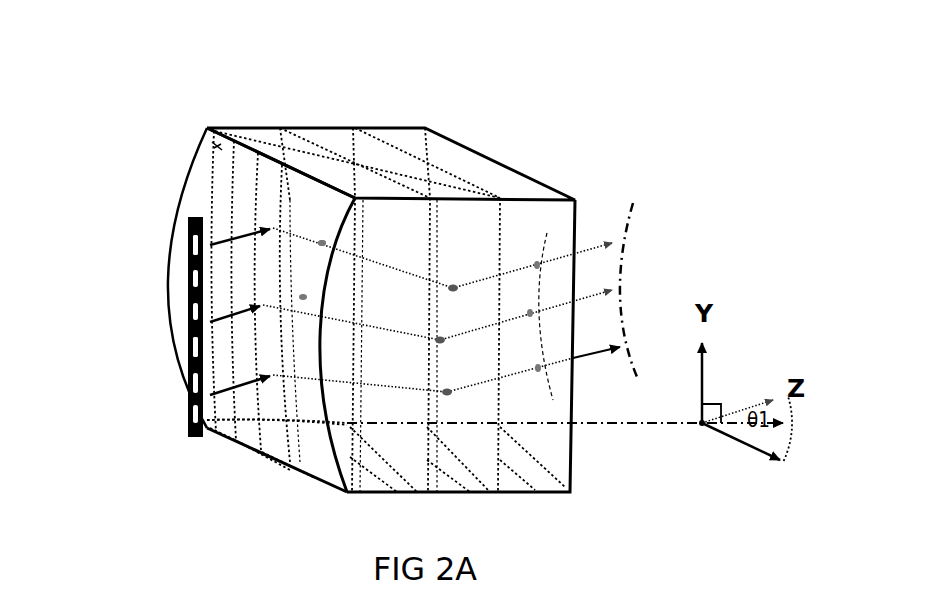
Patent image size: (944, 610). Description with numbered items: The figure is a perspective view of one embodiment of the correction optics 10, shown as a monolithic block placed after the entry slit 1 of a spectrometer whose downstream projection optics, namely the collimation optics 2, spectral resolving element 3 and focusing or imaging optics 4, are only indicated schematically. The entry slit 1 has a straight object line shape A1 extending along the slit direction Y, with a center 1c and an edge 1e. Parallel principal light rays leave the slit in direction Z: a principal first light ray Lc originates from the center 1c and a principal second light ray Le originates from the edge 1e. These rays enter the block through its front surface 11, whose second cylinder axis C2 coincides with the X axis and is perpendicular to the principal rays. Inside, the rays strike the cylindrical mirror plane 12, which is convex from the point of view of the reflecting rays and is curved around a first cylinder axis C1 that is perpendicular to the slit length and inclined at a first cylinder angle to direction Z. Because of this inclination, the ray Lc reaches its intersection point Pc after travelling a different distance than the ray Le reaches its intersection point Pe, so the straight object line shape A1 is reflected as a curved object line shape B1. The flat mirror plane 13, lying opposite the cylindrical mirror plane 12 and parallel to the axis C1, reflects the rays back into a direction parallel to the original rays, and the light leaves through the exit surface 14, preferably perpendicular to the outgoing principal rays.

The correction optics 10 is at (300, 79).
The entry slit 1 is at (197, 445).
The edge of the entry slit 1e is at (184, 252).
The center of the entry slit 1c is at (177, 331).
The straight object line shape A1 is at (191, 295).
The front surface 11 is at (204, 185).
The cylindrical mirror plane 12 is at (198, 136).
The flat mirror plane 13 is at (539, 445).
The exit surface 14 is at (482, 174).
The principal second light ray Le is at (411, 254).
The principal first light ray Lc is at (411, 314).
The intersection point of edge ray Pe is at (314, 231).
The intersection point of center ray Pc is at (301, 289).
The curved object line shape B1 is at (620, 270).
The collimation optics 2 is at (768, 182).
The spectral resolving element 3 is at (768, 182).
The focusing or imaging optics 4 is at (788, 222).
The first cylinder axis C1 is at (522, 424).
The second cylinder axis C2 is at (775, 456).